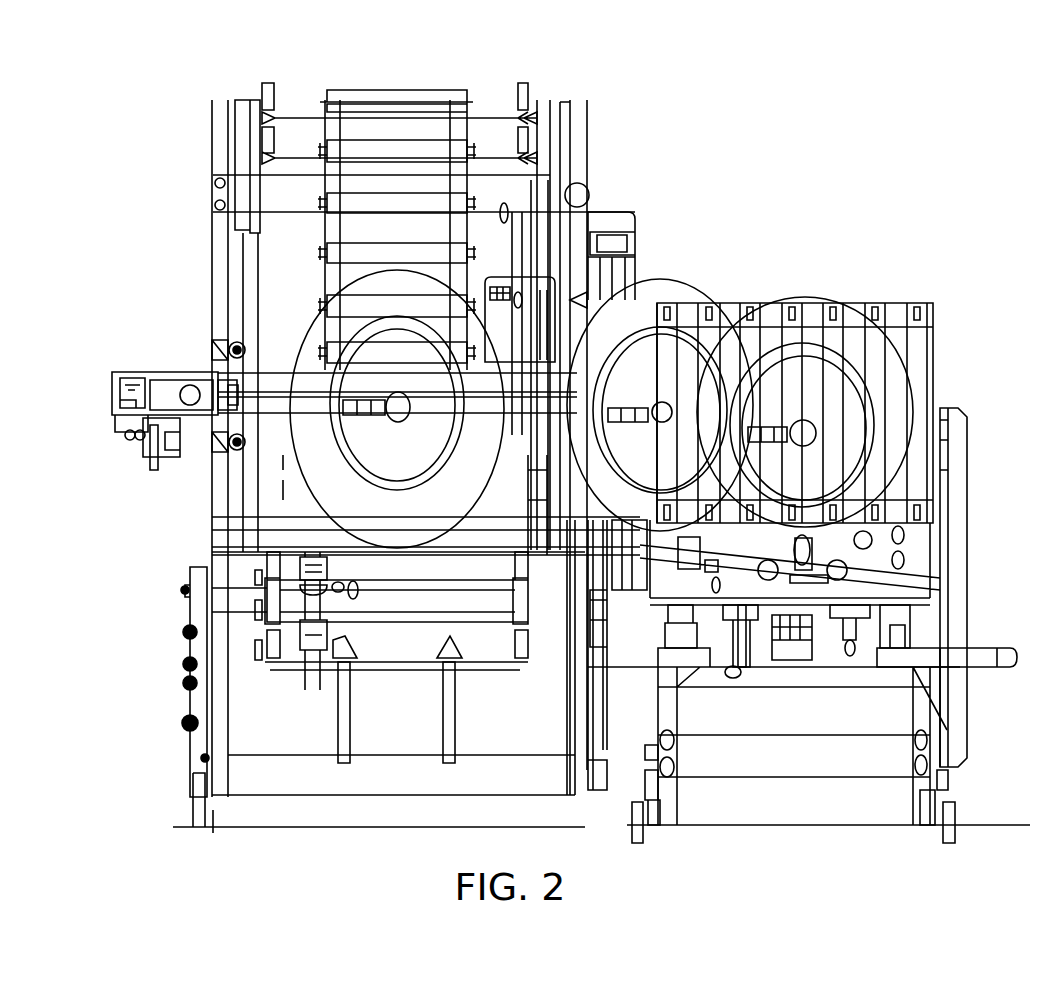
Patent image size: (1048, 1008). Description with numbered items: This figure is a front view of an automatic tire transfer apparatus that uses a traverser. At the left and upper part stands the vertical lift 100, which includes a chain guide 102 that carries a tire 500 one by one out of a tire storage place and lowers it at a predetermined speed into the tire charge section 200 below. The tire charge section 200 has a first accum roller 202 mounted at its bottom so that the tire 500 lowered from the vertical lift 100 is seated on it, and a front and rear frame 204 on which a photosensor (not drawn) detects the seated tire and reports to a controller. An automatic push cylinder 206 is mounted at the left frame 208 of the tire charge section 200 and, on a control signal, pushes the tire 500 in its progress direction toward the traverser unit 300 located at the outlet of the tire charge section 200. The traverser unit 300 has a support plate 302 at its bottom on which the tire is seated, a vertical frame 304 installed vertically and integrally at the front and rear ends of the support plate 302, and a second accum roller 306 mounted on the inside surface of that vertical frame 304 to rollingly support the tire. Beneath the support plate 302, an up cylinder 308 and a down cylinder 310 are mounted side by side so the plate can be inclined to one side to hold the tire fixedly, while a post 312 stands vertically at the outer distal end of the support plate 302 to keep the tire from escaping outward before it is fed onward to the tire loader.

The vertical lift 100 is at (240, 127).
The chain guide 102 is at (396, 140).
The tire charge section 200 is at (254, 302).
The first accum roller 202 is at (325, 502).
The front and rear frame 204 is at (507, 193).
The automatic push cylinder 206 is at (135, 380).
The left frame 208 is at (222, 481).
The traverser unit 300 is at (889, 298).
The support plate 302 is at (917, 573).
The vertical frame 304 is at (742, 302).
The second accum roller 306 is at (841, 302).
The up cylinder 308 is at (745, 645).
The down cylinder 310 is at (875, 620).
The post 312 is at (968, 432).
The tire 500 is at (442, 283).